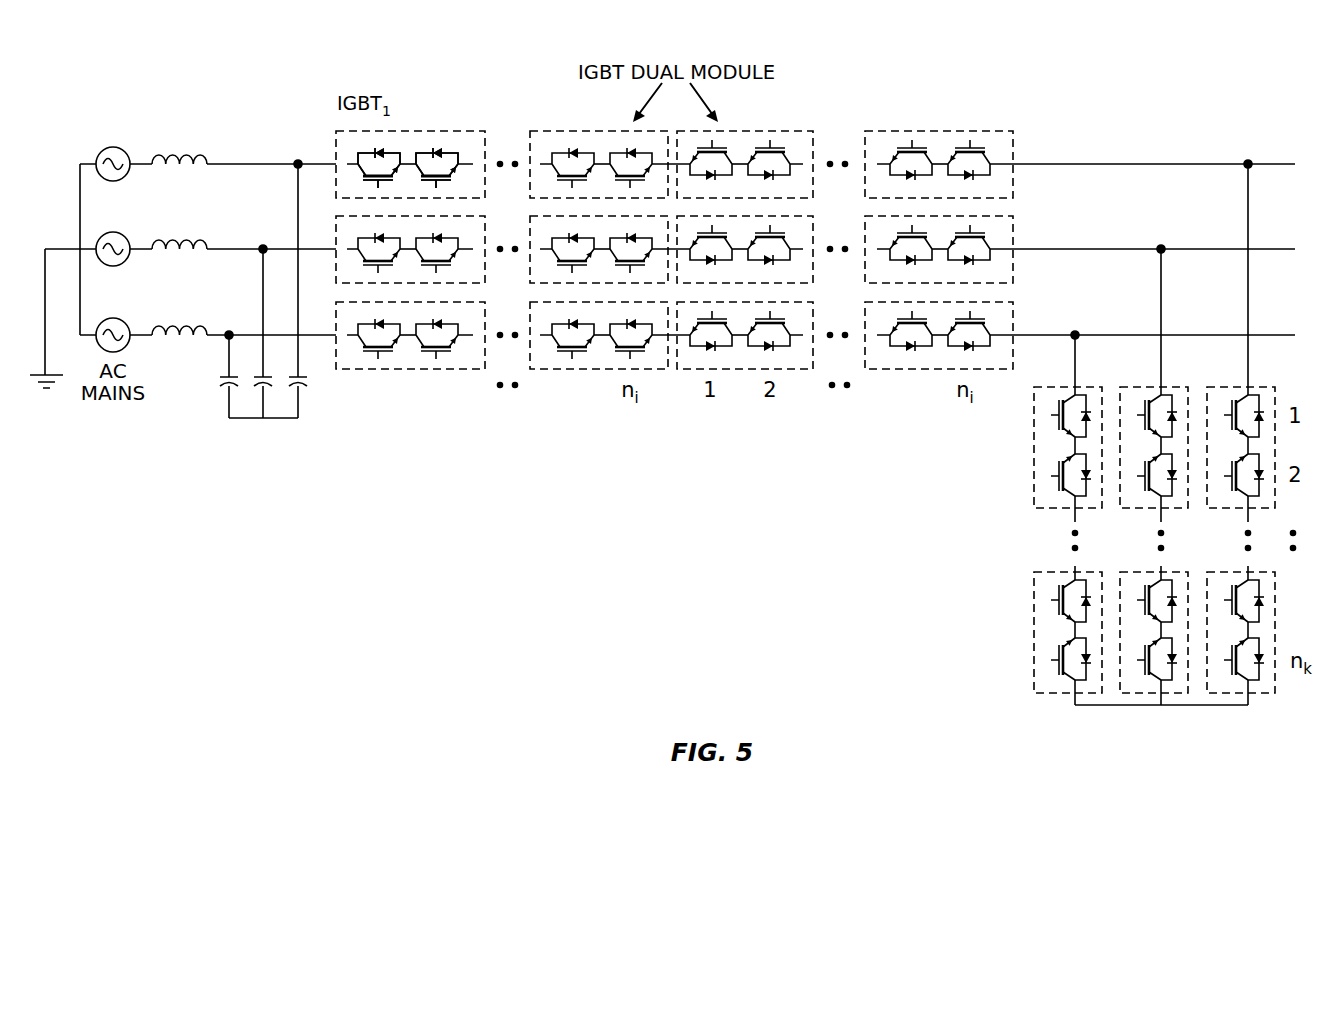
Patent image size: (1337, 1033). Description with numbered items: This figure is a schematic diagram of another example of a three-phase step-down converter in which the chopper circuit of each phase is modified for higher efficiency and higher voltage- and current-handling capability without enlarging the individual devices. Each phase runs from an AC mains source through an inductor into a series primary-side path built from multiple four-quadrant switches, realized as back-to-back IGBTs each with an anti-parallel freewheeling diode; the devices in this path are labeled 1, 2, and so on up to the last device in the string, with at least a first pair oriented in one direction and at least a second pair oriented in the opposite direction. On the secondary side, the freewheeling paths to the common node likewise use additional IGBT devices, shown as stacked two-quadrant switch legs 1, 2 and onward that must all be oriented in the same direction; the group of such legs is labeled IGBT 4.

The first IGBT of dual module 1 is at (379, 275).
The second IGBT of dual module 2 is at (437, 275).
The IGBT4 inverter leg modules 4 is at (1123, 547).